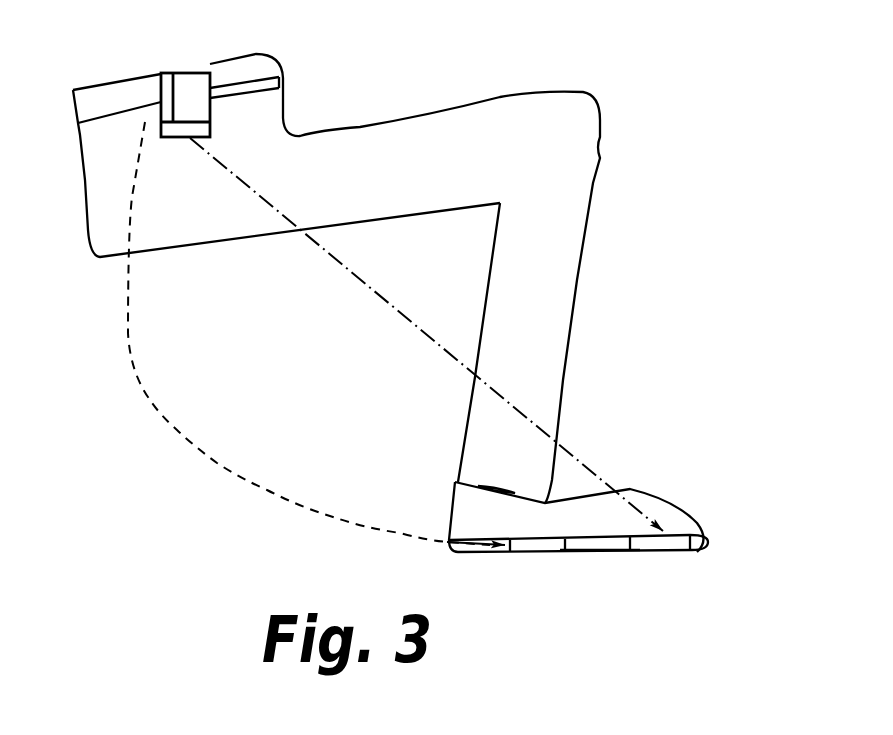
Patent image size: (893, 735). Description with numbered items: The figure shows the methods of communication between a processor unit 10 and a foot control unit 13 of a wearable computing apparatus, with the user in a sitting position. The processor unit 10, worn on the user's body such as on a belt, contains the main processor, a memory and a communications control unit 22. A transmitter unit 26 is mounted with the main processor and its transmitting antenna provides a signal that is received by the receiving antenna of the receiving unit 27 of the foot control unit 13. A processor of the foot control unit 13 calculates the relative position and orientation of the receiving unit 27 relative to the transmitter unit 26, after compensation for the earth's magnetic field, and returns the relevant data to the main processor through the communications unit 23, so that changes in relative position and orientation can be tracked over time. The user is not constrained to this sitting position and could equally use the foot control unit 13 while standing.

The processor unit 10 is at (213, 108).
The communications control unit 22 is at (157, 87).
The transmitter unit 26 is at (173, 139).
The communications unit 23 is at (541, 553).
The receiving unit 27 is at (671, 551).
The foot control unit 13 is at (613, 568).